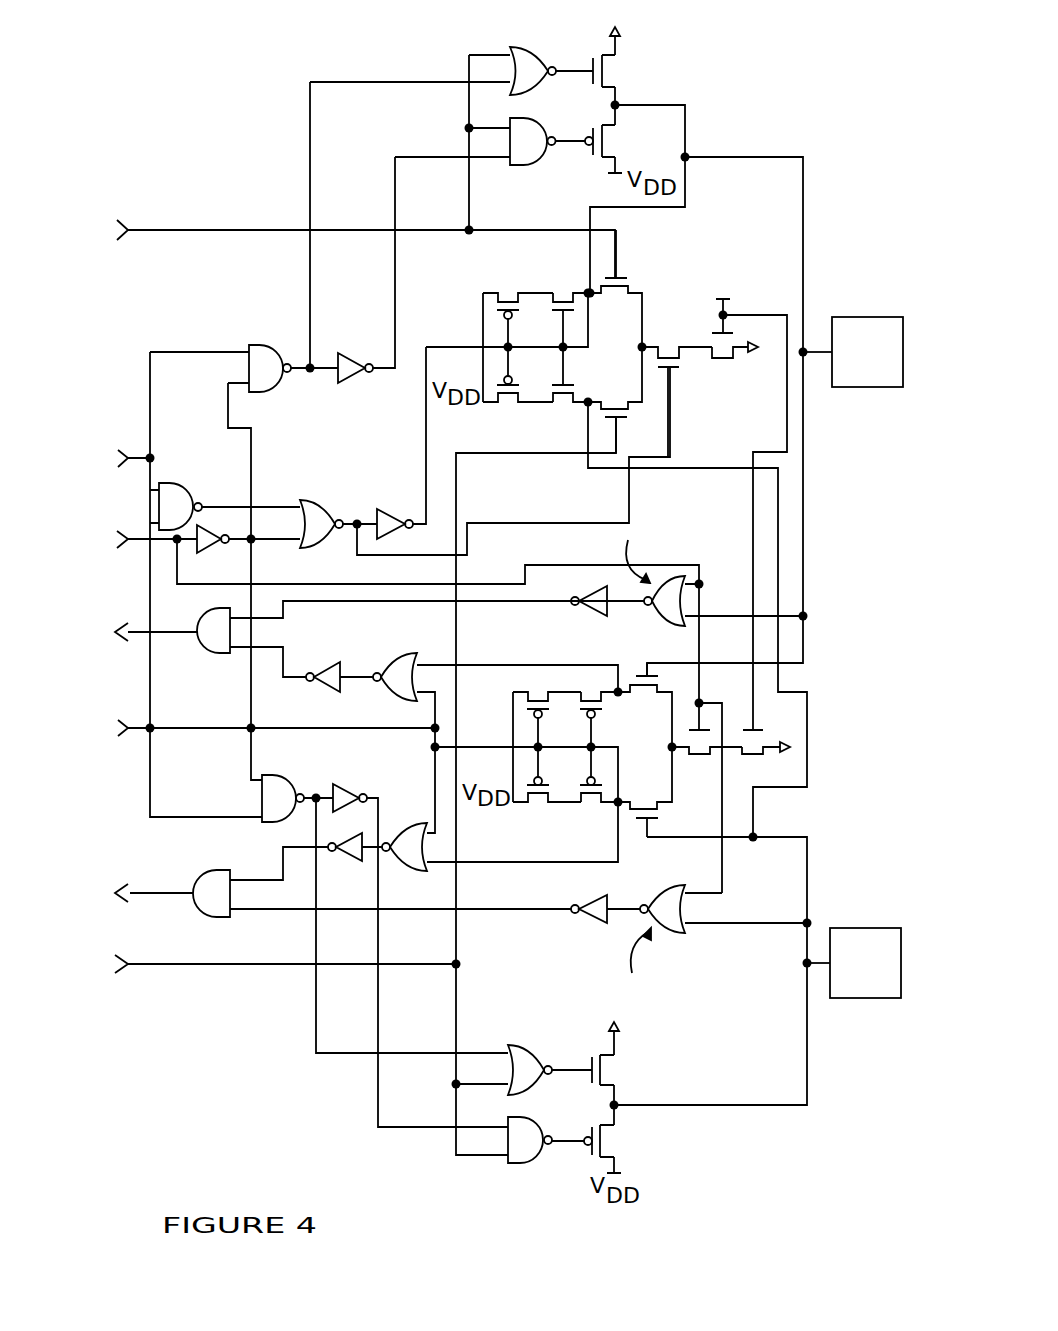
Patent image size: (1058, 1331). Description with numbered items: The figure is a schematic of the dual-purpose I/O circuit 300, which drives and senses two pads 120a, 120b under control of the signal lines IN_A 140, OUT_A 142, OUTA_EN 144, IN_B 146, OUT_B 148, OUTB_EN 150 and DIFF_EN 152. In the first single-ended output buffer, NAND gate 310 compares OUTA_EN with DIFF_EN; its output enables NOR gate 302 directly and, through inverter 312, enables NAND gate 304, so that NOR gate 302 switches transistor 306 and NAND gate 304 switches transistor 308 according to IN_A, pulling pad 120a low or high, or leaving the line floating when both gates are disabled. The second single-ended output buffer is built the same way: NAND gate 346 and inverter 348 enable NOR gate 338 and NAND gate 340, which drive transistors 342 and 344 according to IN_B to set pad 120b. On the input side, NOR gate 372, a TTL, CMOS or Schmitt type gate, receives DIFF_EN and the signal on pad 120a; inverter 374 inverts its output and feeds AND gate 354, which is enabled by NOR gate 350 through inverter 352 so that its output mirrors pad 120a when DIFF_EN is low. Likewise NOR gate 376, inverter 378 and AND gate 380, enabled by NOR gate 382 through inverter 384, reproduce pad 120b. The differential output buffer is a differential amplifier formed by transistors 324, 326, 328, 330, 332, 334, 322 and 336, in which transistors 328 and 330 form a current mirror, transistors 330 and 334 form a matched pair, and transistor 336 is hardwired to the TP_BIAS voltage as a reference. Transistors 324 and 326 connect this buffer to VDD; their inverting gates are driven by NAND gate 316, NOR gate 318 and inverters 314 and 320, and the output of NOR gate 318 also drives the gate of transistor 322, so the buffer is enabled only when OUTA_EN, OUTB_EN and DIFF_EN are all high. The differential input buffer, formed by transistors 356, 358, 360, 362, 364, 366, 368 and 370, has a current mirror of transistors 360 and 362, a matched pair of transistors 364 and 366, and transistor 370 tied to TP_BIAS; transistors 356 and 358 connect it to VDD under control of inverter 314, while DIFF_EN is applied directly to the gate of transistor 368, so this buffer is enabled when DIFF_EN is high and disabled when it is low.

The output driver circuit 300 is at (138, 45).
The NOR gate 302 is at (526, 47).
The NAND gate 304 is at (527, 167).
The transistor 306 is at (618, 71).
The transistor 308 is at (618, 141).
The NAND gate 310 is at (260, 344).
The inverter 312 is at (352, 349).
The inverter 314 is at (212, 556).
The NAND gate 316 is at (181, 483).
The NOR gate 318 is at (318, 494).
The inverter 320 is at (392, 504).
The transistor 322 is at (668, 342).
The transistor 324 is at (509, 291).
The transistor 326 is at (508, 404).
The transistor 328 is at (562, 291).
The transistor 330 is at (563, 404).
The transistor 332 is at (613, 286).
The transistor 334 is at (614, 404).
The transistor 336 is at (722, 360).
The NOR gate 338 is at (522, 1044).
The NAND gate 340 is at (522, 1165).
The transistor 342 is at (605, 1072).
The transistor 344 is at (605, 1142).
The NAND gate 346 is at (269, 774).
The inverter 348 is at (336, 784).
The NOR gate 350 is at (392, 654).
The inverter 352 is at (325, 661).
The AND gate 354 is at (214, 655).
The transistor 356 is at (540, 680).
The transistor 358 is at (540, 804).
The transistor 360 is at (593, 680).
The transistor 362 is at (593, 804).
The transistor 364 is at (645, 694).
The transistor 366 is at (644, 808).
The transistor 368 is at (700, 756).
The transistor 370 is at (753, 756).
The NOR gate 372 is at (657, 628).
The inverter 374 is at (586, 620).
The NOR gate 376 is at (672, 935).
The inverter 378 is at (592, 927).
The AND gate 380 is at (215, 919).
The NOR gate 382 is at (406, 873).
The inverter 384 is at (343, 862).
The IN_A input signal line 140 is at (197, 233).
The OUT_A output signal line 142 is at (136, 626).
The OUTA_EN enable signal line 144 is at (136, 456).
The IN_B input signal line 146 is at (136, 961).
The OUT_B output signal line 148 is at (136, 889).
The OUTB_EN enable signal line 150 is at (136, 724).
The DIFF_EN enable signal line 152 is at (136, 534).
The pad 120a is at (862, 389).
The pad 120b is at (860, 1000).